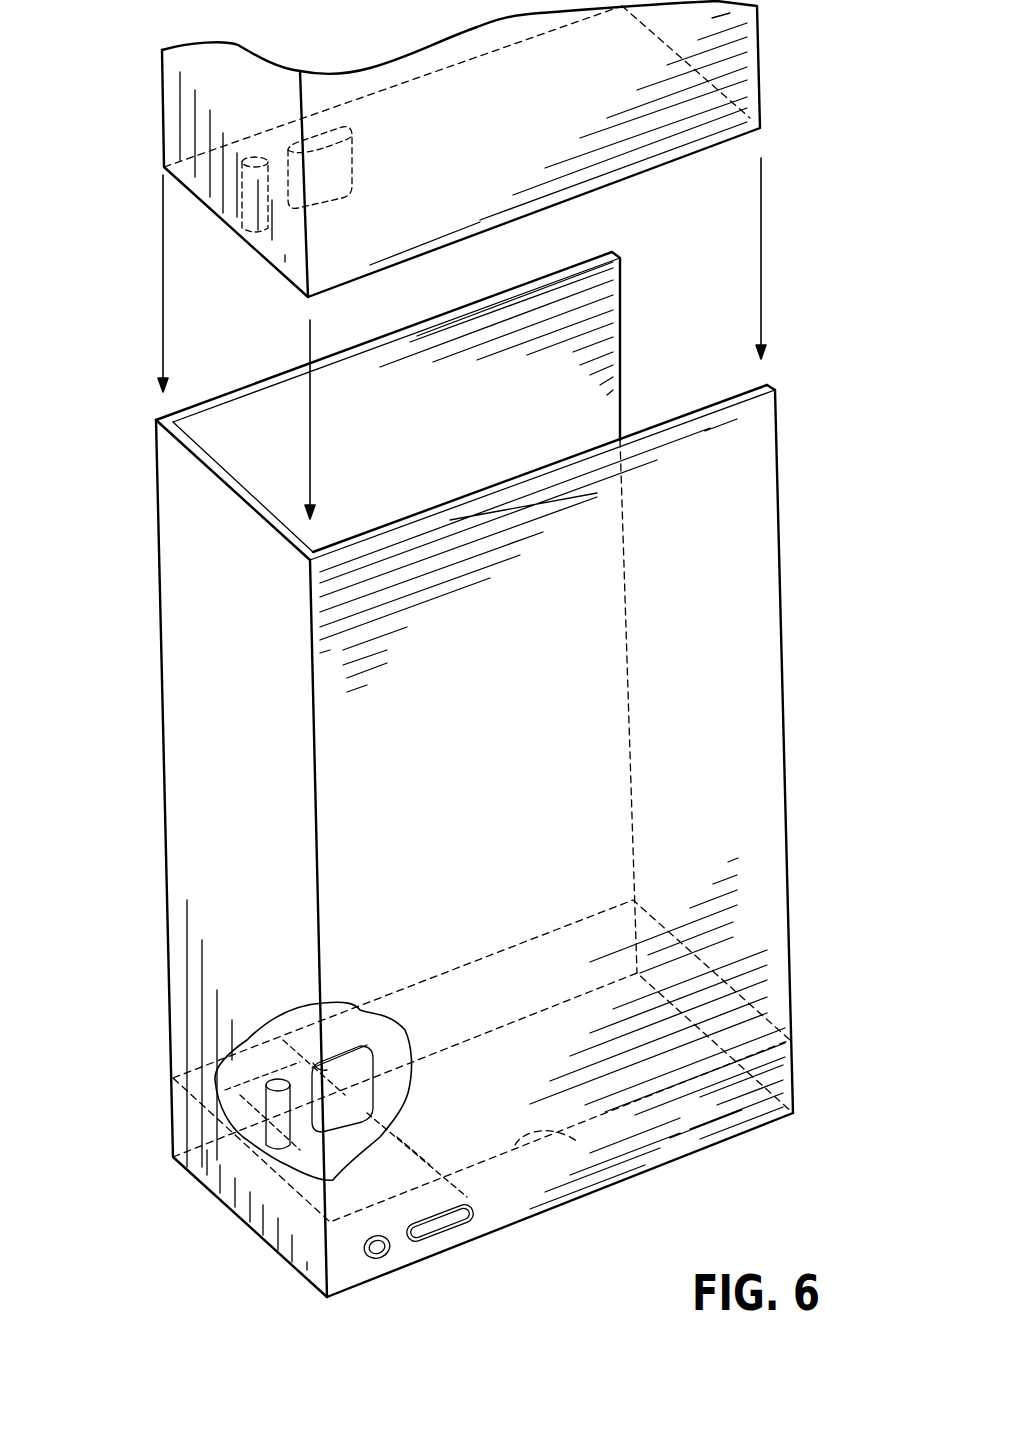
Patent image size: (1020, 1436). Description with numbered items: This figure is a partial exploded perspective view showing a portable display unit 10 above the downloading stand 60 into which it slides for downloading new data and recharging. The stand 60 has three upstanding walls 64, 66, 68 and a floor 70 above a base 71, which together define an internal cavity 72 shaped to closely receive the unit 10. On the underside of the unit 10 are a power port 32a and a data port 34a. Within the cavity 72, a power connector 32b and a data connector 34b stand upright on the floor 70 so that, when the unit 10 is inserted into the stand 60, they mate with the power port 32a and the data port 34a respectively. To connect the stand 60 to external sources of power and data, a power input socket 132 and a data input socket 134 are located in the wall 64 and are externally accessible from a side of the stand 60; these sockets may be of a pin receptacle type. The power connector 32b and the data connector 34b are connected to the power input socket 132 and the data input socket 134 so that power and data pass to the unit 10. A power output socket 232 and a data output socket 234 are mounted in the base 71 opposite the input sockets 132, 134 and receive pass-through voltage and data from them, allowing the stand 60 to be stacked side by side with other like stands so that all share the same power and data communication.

The portable display unit 10 is at (777, 64).
The power port 32a is at (163, 167).
The data port 34a is at (337, 167).
The downloading stand 60 is at (785, 706).
The wall 64 is at (763, 490).
The wall 66 is at (177, 603).
The wall 68 is at (273, 398).
The floor 70 is at (580, 1128).
The base 71 is at (513, 1208).
The internal cavity 72 is at (470, 405).
The power connector 32b is at (397, 1018).
The data connector 34b is at (365, 1042).
The power output socket 232 is at (197, 1070).
The data output socket 234 is at (233, 1047).
The power input socket 132 is at (380, 1263).
The data input socket 134 is at (452, 1233).